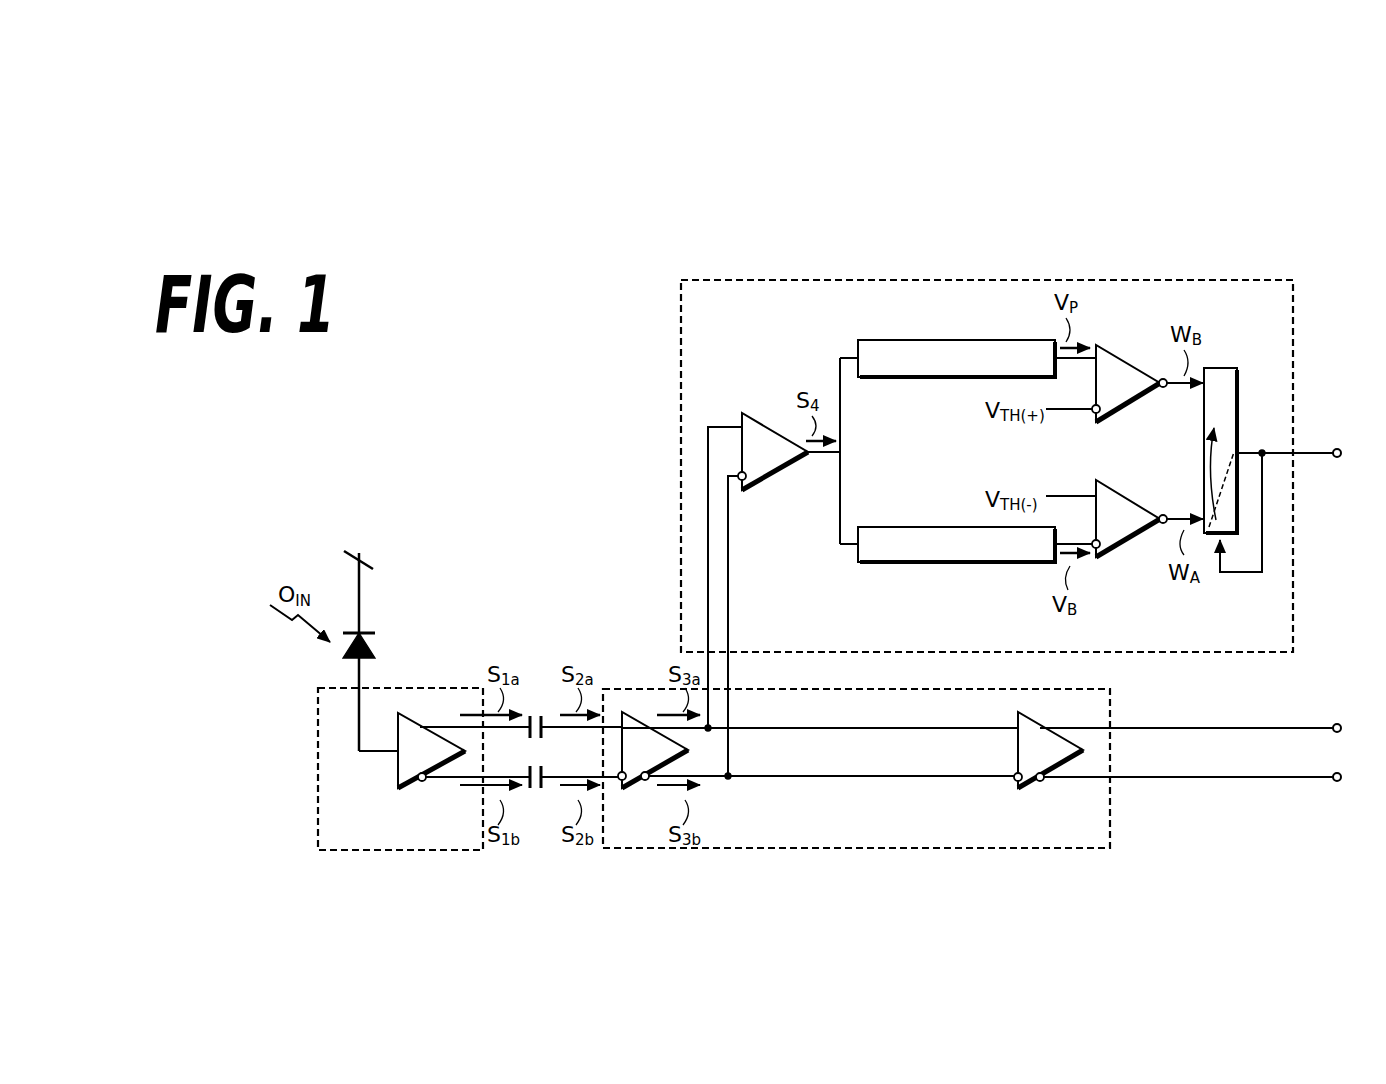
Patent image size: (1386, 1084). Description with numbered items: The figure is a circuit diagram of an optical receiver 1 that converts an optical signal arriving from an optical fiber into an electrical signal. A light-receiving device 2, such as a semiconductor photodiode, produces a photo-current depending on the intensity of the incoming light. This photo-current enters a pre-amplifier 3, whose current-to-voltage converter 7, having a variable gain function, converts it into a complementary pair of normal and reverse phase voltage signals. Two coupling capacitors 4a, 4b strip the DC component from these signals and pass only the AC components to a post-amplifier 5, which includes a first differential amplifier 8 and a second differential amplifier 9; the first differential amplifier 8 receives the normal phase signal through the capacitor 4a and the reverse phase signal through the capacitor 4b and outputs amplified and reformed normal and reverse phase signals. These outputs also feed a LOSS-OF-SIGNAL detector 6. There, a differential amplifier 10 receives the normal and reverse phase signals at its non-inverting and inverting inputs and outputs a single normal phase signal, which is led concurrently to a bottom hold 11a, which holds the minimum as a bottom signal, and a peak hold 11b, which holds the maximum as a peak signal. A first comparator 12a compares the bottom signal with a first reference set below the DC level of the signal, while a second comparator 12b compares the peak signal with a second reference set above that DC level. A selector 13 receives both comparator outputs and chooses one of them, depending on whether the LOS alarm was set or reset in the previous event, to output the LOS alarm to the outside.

The optical receiver 1 is at (1248, 246).
The light-receiving device 2 is at (372, 642).
The pre-amplifier 3 is at (437, 851).
The coupling capacitor 4a is at (540, 710).
The coupling capacitor 4b is at (546, 795).
The post-amplifier 5 is at (1062, 850).
The LOSS-OF-SIGNAL detector 6 is at (1176, 278).
The current-to-voltage converter 7 is at (420, 792).
The first differential amplifier 8 is at (640, 792).
The differential amplifier 9 is at (1034, 792).
The differential amplifier 10 is at (758, 486).
The bottom hold 11a is at (908, 564).
The peak hold 11b is at (908, 379).
The first comparator 12a is at (1110, 560).
The second comparator 12b is at (1110, 425).
The selector 13 is at (1220, 366).